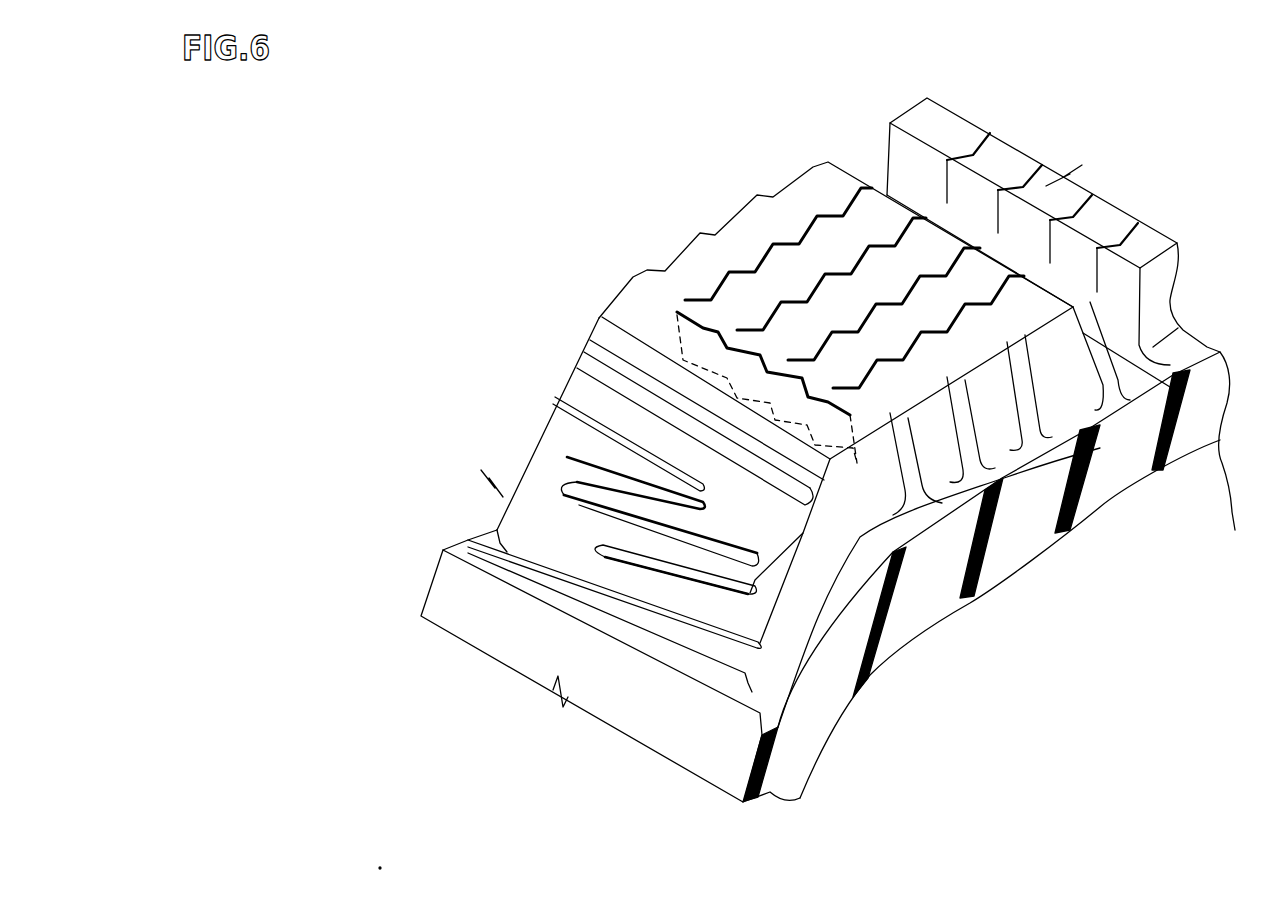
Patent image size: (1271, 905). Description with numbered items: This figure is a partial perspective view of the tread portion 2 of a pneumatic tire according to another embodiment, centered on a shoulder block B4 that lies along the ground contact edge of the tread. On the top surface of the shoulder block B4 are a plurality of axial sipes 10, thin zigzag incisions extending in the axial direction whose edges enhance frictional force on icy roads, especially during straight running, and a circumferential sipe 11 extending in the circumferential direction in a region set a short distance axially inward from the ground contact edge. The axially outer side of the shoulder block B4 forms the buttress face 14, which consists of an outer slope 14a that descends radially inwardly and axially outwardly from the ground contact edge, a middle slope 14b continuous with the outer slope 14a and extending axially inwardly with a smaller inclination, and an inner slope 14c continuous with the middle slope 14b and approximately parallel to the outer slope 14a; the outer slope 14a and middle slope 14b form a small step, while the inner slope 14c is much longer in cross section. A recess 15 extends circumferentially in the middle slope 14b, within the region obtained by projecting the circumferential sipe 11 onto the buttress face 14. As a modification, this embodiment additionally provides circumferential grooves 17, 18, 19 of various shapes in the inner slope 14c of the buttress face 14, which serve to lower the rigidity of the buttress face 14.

The tread portion 2 is at (862, 122).
The shoulder block B4 is at (714, 180).
The axial sipe 10 is at (822, 196).
The circumferential sipe 11 is at (694, 303).
The buttress face 14 is at (438, 295).
The outer slope 14a is at (602, 333).
The middle slope 14b is at (583, 360).
The inner slope 14c is at (575, 393).
The recess 15 is at (633, 395).
The circumferential groove 17 is at (577, 440).
The circumferential groove 18 is at (600, 503).
The circumferential groove 19 is at (700, 588).